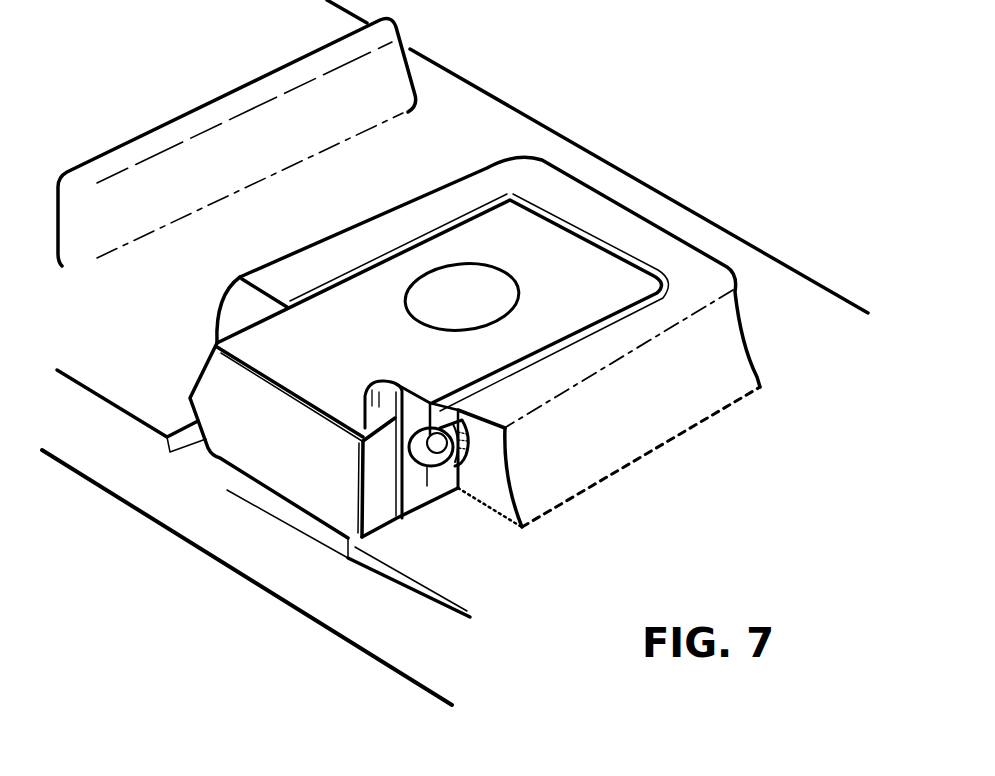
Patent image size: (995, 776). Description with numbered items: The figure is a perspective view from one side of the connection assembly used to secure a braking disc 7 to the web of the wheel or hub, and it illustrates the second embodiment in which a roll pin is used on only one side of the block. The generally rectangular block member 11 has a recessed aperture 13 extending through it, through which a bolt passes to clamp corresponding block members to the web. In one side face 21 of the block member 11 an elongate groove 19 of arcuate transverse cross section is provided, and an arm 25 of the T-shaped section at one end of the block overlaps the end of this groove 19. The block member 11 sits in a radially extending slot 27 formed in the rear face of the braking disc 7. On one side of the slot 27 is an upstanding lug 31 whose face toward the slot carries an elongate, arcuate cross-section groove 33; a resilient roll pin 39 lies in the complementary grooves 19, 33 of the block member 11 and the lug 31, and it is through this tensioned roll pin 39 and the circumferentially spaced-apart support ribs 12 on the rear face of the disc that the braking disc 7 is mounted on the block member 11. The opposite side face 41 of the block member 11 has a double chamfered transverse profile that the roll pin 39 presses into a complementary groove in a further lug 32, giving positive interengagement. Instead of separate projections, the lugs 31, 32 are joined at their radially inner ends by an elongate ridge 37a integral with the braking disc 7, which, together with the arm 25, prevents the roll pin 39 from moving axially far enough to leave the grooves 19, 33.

The braking disc 7 is at (330, 582).
The block member 11 is at (543, 314).
The support rib 12 is at (233, 170).
The recessed aperture 13 is at (460, 304).
The elongate groove 19 is at (412, 456).
The side face 21 is at (438, 409).
The arm 25 is at (363, 413).
The radially extending slot 27 is at (260, 494).
The lug 31 is at (590, 352).
The further lug 32 is at (450, 200).
The arcuate cross-section groove 33 is at (469, 465).
The elongate ridge 37a is at (600, 212).
The roll pin 39 is at (460, 472).
The opposite side face 41 is at (197, 374).